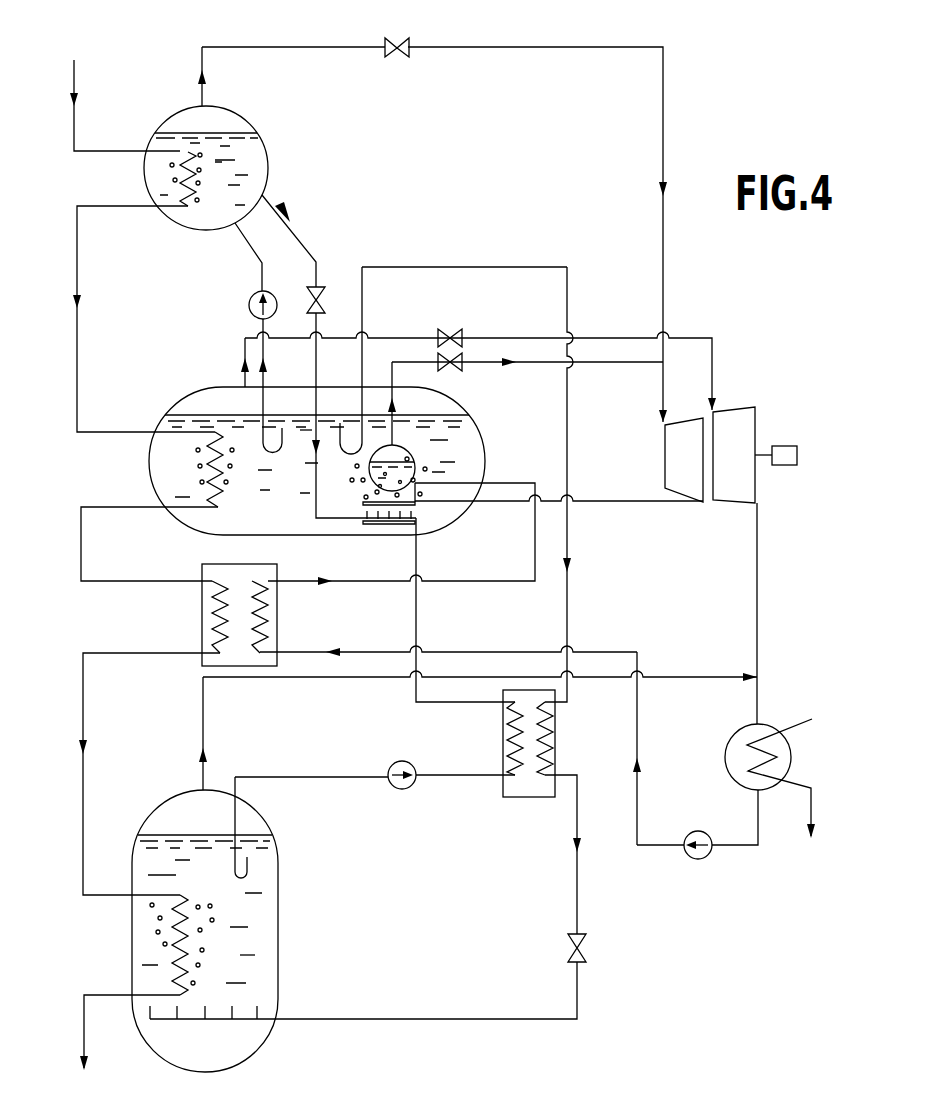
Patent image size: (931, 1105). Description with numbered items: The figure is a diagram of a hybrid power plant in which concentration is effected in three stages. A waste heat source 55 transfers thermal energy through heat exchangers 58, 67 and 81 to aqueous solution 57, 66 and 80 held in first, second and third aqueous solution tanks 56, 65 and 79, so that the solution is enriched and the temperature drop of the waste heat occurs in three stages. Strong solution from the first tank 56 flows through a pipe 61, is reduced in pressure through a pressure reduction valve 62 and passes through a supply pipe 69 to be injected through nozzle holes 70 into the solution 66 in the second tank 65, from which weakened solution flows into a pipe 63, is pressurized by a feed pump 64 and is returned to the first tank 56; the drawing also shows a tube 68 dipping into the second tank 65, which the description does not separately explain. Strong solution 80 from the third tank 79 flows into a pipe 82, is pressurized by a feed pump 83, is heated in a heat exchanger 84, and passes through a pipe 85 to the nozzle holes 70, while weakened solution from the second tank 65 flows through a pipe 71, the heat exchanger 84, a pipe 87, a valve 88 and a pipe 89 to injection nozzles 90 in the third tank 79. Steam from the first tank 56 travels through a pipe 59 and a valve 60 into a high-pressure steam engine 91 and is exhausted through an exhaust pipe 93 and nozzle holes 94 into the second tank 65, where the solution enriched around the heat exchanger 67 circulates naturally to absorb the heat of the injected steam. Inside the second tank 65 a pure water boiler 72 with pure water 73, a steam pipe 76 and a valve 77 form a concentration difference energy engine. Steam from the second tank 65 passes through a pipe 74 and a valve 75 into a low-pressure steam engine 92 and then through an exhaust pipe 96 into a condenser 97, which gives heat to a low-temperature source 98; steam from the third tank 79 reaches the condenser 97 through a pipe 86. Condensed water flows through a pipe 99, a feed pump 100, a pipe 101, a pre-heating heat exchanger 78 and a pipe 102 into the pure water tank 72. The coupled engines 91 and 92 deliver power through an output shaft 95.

The waste heat source 55 is at (77, 92).
The first aqueous solution tank 56 is at (266, 158).
The aqueous solution 57 is at (251, 175).
The heat exchanger 58 is at (186, 208).
The pipe 59 is at (337, 47).
The valve 60 is at (405, 40).
The pipe 61 is at (297, 238).
The pressure reduction valve 62 is at (320, 288).
The pipe 63 is at (258, 257).
The feed pump 64 is at (249, 306).
The second aqueous solution tank 65 is at (158, 425).
The aqueous solution 66 is at (206, 169).
The heat exchanger 67 is at (208, 507).
The inlet tube 68 is at (262, 446).
The supply pipe 69 is at (299, 460).
The nozzle holes 70 is at (390, 526).
The pipe 71 is at (362, 400).
The pure water boiler 72 is at (400, 448).
The pure water 73 is at (408, 467).
The pipe 74 is at (393, 337).
The valve 75 is at (455, 328).
The steam pipe 76 is at (408, 360).
The valve 77 is at (455, 369).
The heat exchanger 78 is at (202, 625).
The third aqueous solution tank 79 is at (277, 908).
The aqueous solution 80 is at (253, 970).
The heat exchanger 81 is at (182, 895).
The pipe 82 is at (236, 823).
The feed pump 83 is at (404, 791).
The heat exchanger 84 is at (508, 797).
The pipe 85 is at (417, 627).
The pipe 86 is at (362, 679).
The pipe 87 is at (578, 898).
The valve 88 is at (586, 955).
The pipe 89 is at (513, 1021).
The injection nozzles 90 is at (240, 1021).
The high-pressure steam engine 91 is at (683, 418).
The low-pressure steam engine 92 is at (733, 412).
The exhaust pipe 93 is at (616, 505).
The nozzle holes 94 is at (417, 506).
The output shaft 95 is at (797, 445).
The exhaust pipe 96 is at (758, 568).
The condenser 97 is at (772, 725).
The low-temperature source 98 is at (817, 817).
The pipe 99 is at (748, 845).
The feed pump 100 is at (712, 833).
The pipe 101 is at (640, 738).
The pipe 102 is at (503, 581).